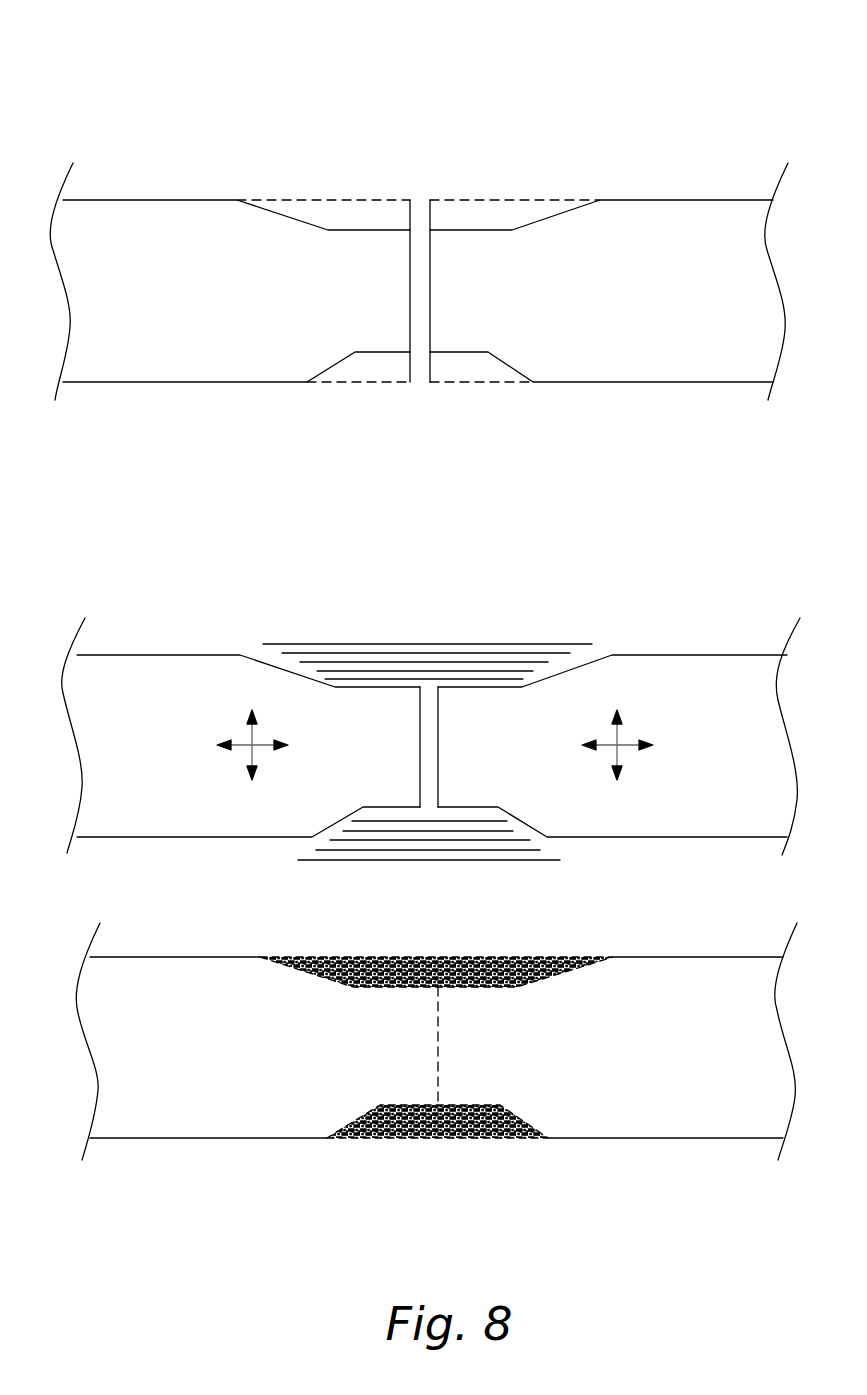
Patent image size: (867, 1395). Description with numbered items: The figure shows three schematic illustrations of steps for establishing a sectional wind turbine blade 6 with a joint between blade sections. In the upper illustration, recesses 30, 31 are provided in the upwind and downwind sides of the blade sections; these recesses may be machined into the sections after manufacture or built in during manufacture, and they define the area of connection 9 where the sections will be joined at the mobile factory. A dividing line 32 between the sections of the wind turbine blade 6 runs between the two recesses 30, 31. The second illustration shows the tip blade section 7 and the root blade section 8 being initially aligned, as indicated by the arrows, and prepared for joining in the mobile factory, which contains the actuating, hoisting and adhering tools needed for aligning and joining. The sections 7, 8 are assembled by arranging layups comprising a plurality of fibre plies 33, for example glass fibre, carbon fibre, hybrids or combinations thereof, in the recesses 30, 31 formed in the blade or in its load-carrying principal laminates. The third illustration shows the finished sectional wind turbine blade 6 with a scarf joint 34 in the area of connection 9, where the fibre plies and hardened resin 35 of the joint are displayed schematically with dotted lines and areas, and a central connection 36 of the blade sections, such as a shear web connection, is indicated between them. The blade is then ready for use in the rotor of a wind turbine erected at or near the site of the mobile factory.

The sectional wind turbine blade 6 is at (220, 90).
The tip blade section 7 is at (690, 227).
The root blade section 8 is at (150, 227).
The area of connection 9 is at (558, 623).
The machined recess 30 is at (360, 213).
The machined recess 31 is at (522, 213).
The dividing line 32 is at (425, 208).
The plurality of fibre plies 33 is at (382, 643).
The scarf joint 34 is at (470, 1152).
The fibre plies and hardened resin 35 is at (388, 967).
The central connection 36 is at (440, 1058).